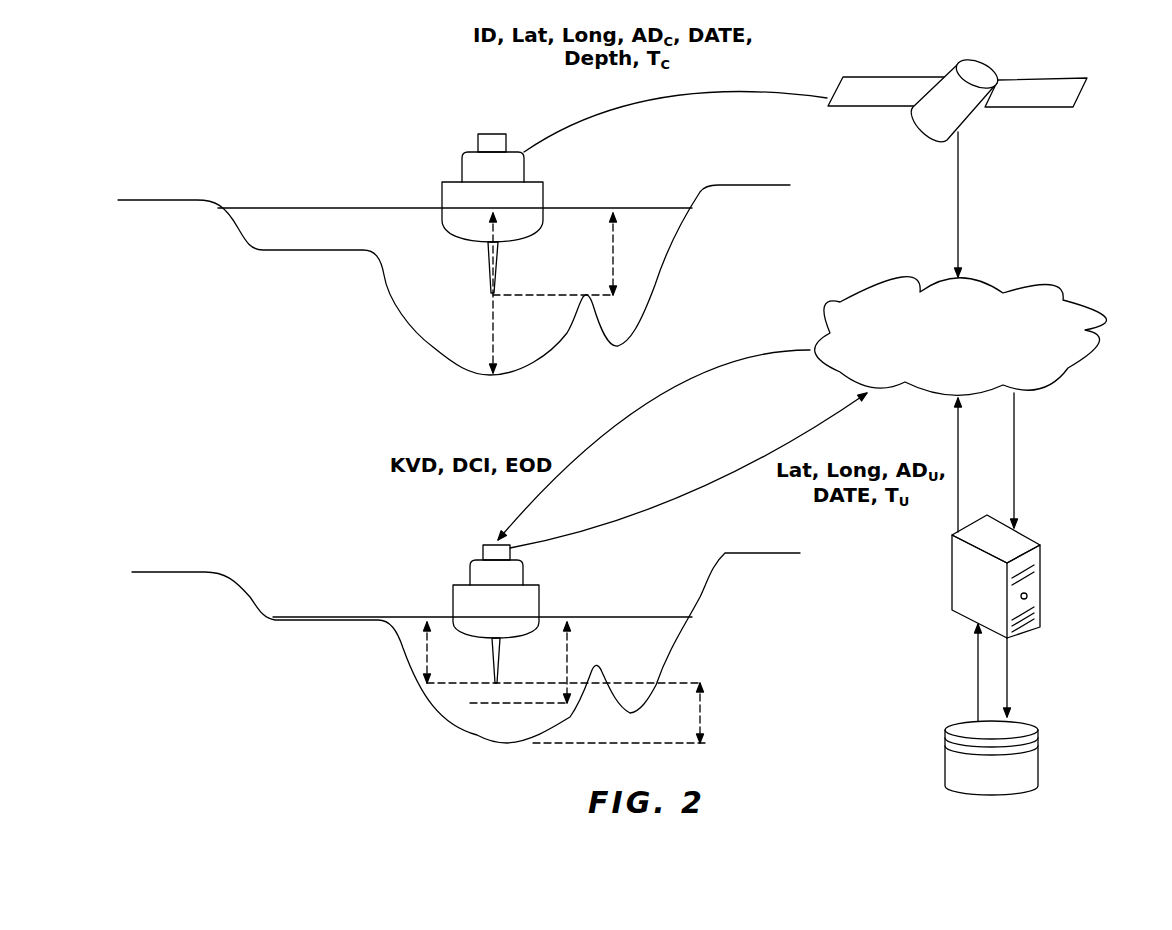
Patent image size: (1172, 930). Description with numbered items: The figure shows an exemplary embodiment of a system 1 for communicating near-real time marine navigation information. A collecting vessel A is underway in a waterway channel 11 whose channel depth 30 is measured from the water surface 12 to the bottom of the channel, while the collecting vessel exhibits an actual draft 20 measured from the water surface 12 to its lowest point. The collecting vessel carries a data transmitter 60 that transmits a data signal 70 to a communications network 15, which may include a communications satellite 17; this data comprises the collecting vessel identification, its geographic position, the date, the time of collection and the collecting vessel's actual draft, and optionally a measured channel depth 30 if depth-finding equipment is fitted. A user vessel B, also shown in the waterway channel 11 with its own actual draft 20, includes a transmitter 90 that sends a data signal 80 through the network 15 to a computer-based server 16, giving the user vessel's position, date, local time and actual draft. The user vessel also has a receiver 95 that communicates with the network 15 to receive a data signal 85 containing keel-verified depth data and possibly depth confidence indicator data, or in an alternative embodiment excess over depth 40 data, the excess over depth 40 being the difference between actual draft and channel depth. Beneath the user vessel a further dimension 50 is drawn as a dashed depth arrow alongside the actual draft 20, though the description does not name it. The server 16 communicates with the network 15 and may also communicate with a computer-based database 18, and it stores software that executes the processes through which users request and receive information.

The system 1 is at (216, 60).
The waterway channel 11 is at (396, 160).
The water surface 12 is at (313, 208).
The communications network 15 is at (1040, 388).
The server 16 is at (1043, 587).
The communications satellite 17 is at (972, 112).
The database 18 is at (945, 757).
The actual draft 20 is at (613, 273).
The channel depth 30 is at (493, 317).
The excess over depth 40 is at (700, 716).
The keel clearance depth 50 is at (567, 663).
The data transmitter 60 is at (478, 134).
The data signal 70 is at (693, 90).
The data signal 80 is at (828, 421).
The data signal 85 is at (657, 397).
The transmitter 90 is at (443, 543).
The receiver 95 is at (483, 545).